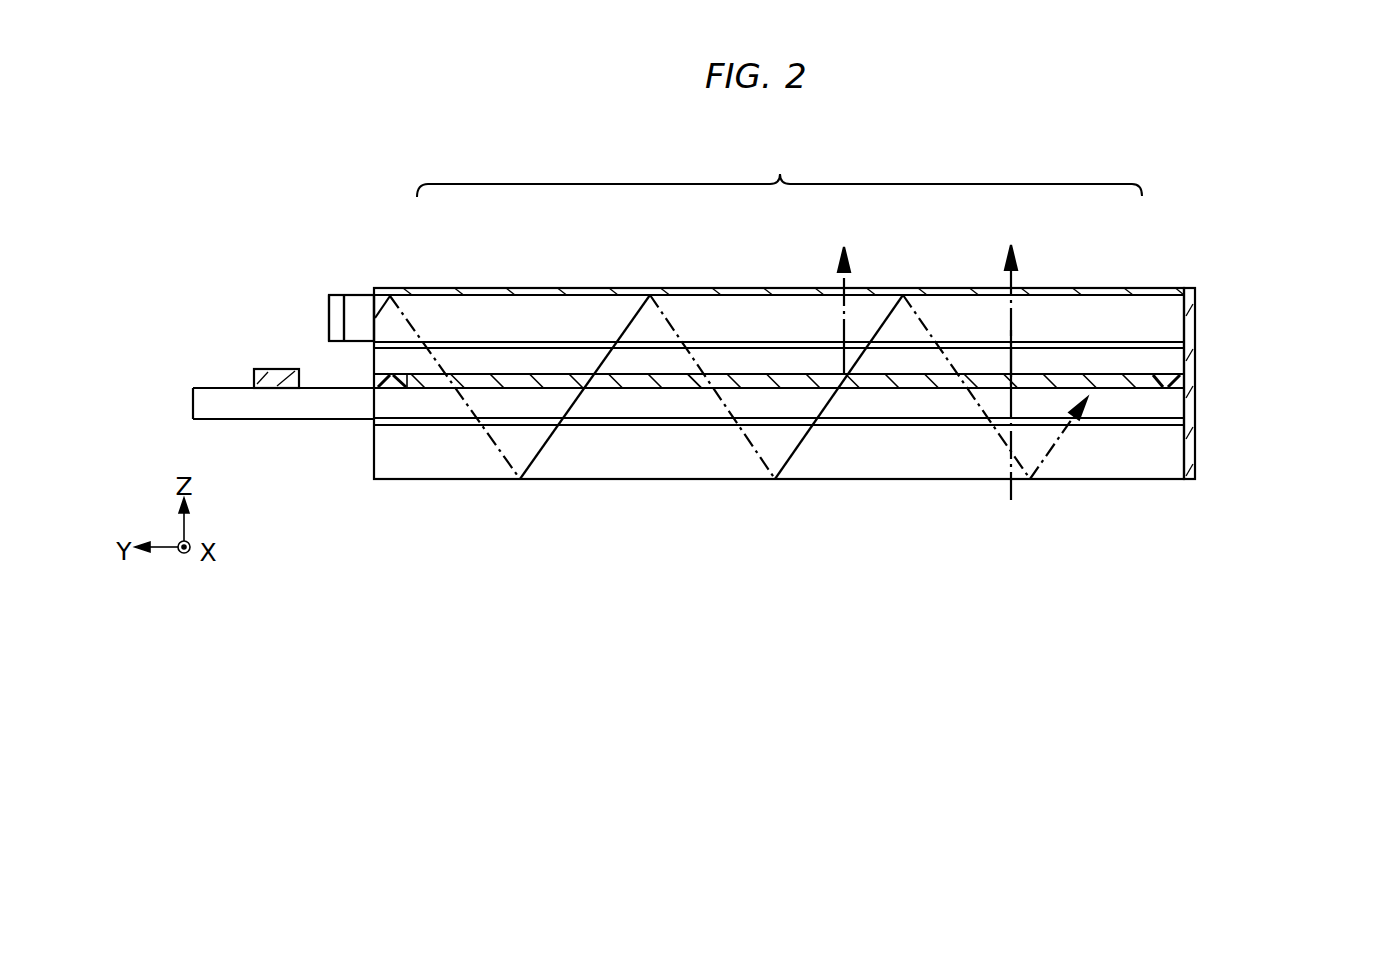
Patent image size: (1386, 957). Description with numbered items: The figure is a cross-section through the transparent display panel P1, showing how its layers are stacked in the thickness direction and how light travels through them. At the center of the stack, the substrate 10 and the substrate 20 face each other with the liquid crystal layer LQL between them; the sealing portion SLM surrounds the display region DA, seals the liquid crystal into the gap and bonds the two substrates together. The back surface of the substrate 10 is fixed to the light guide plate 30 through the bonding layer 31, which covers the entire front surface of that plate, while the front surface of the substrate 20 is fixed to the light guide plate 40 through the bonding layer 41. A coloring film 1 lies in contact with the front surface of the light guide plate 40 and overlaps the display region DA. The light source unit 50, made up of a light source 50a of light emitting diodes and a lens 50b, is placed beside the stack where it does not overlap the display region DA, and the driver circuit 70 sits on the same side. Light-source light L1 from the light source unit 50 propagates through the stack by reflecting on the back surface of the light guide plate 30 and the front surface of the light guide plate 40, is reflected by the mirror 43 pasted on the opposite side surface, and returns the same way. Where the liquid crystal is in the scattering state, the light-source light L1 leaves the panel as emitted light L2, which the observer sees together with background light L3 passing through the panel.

The coloring film 1 is at (540, 290).
The substrate 10 is at (1158, 405).
The substrate 20 is at (1158, 360).
The light guide plate 30 is at (1158, 452).
The bonding layer 31 is at (437, 422).
The light guide plate 40 is at (1158, 315).
The bonding layer 41 is at (485, 345).
The mirror 43 is at (1190, 463).
The light source unit 50 is at (390, 229).
The light source 50a is at (332, 310).
The lens 50b is at (357, 303).
The driver circuit 70 is at (273, 368).
The sealing portion SLM is at (1185, 382).
The liquid crystal layer LQL is at (680, 381).
The light-source light L1 is at (623, 313).
The emitted light L2 is at (842, 328).
The background light L3 is at (1010, 320).
The display region DA is at (779, 170).
The display panel P1 is at (1204, 192).